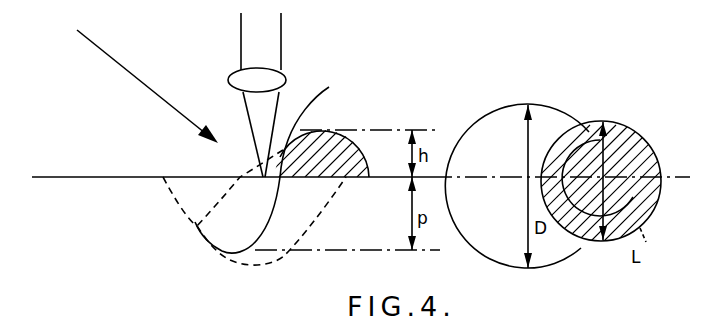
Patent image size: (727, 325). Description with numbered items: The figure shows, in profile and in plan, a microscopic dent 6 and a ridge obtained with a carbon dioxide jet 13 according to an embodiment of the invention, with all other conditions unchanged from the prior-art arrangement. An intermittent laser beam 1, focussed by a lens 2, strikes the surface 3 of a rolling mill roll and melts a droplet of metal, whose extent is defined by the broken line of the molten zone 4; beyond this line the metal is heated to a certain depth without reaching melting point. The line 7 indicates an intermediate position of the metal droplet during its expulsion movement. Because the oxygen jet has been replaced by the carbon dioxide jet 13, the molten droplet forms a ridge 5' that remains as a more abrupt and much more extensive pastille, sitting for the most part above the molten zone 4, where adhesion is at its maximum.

The intermittent laser beam 1 is at (268, 29).
The lens 2 is at (251, 72).
The surface 3 is at (70, 176).
The molten zone 4 is at (220, 253).
The ridge 5' is at (462, 152).
The microscopic dent 6 is at (250, 222).
The line indicating intermediate position of the metal droplet 7 is at (270, 151).
The carbon dioxide jet 13 is at (115, 60).